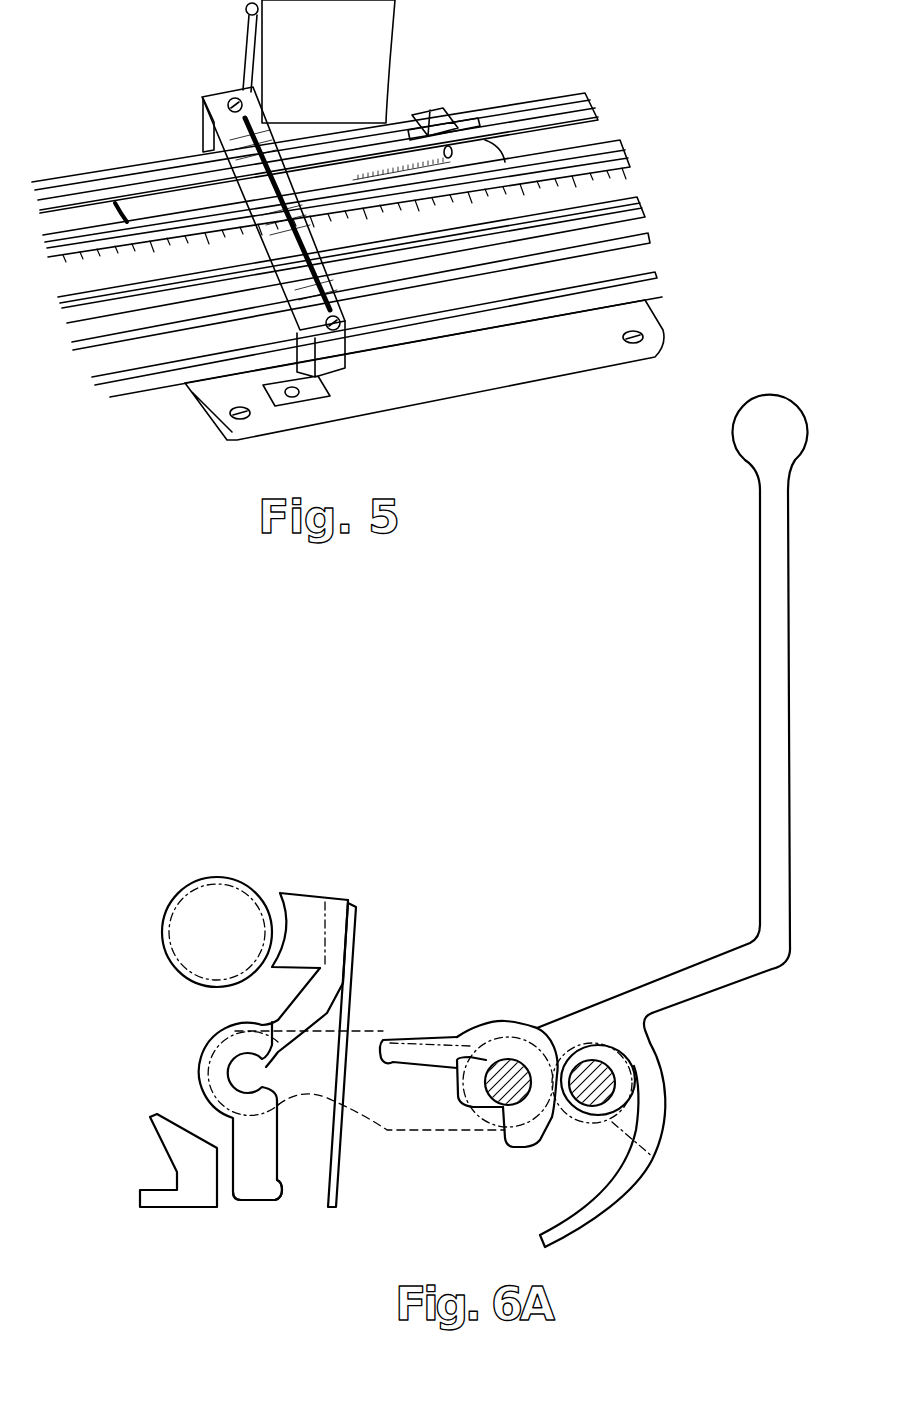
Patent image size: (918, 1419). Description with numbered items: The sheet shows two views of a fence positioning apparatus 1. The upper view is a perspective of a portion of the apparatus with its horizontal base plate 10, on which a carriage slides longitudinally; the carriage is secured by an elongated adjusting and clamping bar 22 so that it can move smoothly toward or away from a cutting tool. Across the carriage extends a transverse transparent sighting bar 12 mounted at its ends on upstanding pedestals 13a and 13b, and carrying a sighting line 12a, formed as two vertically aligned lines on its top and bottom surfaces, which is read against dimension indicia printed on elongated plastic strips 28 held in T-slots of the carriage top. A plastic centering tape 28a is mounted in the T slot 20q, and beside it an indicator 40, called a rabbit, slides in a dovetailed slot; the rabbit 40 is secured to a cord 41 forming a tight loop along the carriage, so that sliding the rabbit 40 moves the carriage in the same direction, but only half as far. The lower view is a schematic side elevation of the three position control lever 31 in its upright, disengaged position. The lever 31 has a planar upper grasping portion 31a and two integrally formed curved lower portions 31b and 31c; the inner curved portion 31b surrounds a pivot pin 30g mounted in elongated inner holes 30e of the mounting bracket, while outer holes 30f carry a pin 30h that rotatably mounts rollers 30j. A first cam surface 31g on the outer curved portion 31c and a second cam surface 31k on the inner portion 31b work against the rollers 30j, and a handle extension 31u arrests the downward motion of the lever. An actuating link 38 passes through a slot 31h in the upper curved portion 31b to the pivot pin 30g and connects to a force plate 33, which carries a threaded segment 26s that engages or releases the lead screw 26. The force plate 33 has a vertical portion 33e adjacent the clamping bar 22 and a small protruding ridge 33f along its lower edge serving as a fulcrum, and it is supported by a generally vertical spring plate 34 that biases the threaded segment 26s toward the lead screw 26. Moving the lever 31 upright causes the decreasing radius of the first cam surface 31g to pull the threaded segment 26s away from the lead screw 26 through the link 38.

In FIG. 5, the fence positioning apparatus 1 is at (514, 88).
In FIG. 5, the base plate 10 is at (578, 348).
In FIG. 5, the sighting bar 12 is at (251, 189).
In FIG. 5, the sighting line 12a is at (257, 125).
In FIG. 5, the pedestal 13a is at (338, 375).
In FIG. 5, the pedestal 13b is at (203, 140).
In FIG. 5, the T-slot 20q is at (583, 133).
In FIG. 5, the elongated plastic strips 28 is at (77, 280).
In FIG. 5, the plastic centering tape 28a is at (138, 202).
In FIG. 5, the three position control lever 31 is at (340, 53).
In FIG. 6A, the three position control lever 31 is at (616, 830).
In FIG. 6A, the upper grasping portion 31a is at (792, 778).
In FIG. 6A, the upper curved lower portion 31b is at (668, 972).
In FIG. 6A, the outer curved lower portion 31c is at (635, 1190).
In FIG. 6A, the first cam surface 31g is at (618, 1152).
In FIG. 6A, the slot 31h is at (492, 1058).
In FIG. 6A, the second cam surface 31k is at (552, 1142).
In FIG. 6A, the handle extension 31u is at (388, 1045).
In FIG. 5, the indicator 40 is at (432, 112).
In FIG. 5, the cord 41 is at (450, 152).
In FIG. 6A, the adjusting and clamping bar 22 is at (192, 1168).
In FIG. 6A, the lead screw 26 is at (217, 876).
In FIG. 6A, the threaded segment 26s is at (303, 893).
In FIG. 6A, the inner hole 30e is at (463, 1100).
In FIG. 6A, the outer hole 30f is at (617, 1076).
In FIG. 6A, the pivot pin 30g is at (486, 1062).
In FIG. 6A, the pin 30h is at (638, 1070).
In FIG. 6A, the rollers 30j is at (653, 1157).
In FIG. 6A, the force plate 33 is at (251, 1081).
In FIG. 6A, the vertical portion 33e is at (230, 1178).
In FIG. 6A, the protruding ridge 33f is at (283, 1197).
In FIG. 6A, the spring plate 34 is at (357, 958).
In FIG. 6A, the actuating link 38 is at (387, 1130).